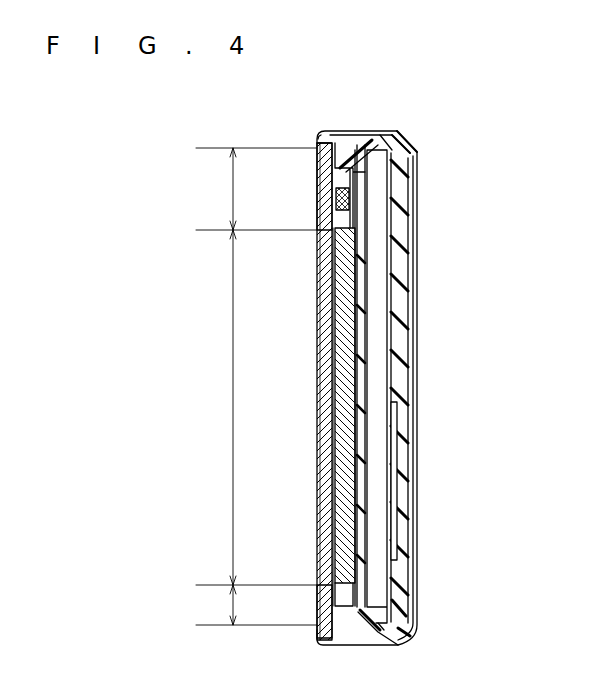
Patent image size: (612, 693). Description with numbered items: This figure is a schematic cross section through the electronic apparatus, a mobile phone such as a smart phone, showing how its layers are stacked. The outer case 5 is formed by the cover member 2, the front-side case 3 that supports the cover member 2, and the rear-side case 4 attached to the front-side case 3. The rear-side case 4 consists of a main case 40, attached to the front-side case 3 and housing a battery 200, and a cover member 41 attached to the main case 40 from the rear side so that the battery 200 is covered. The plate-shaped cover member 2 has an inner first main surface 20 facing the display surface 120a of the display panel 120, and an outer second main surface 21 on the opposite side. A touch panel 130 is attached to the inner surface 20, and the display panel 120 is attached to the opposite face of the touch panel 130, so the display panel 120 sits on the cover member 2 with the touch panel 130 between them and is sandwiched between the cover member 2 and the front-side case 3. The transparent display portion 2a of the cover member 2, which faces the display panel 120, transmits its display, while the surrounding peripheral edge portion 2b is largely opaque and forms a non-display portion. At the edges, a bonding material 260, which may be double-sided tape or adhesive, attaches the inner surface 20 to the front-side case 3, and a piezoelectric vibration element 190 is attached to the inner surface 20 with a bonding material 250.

The outer case 5 is at (408, 129).
The rear-side case 4 is at (481, 520).
The main case 40 is at (415, 567).
The cover member 41 is at (412, 535).
The cover member 2 is at (317, 312).
The second main surface 21 is at (317, 355).
The display portion 2a is at (215, 411).
The peripheral edge portion 2b is at (215, 397).
The bonding material 260 is at (317, 160).
The bonding material 250 is at (333, 208).
The display panel 120 is at (350, 247).
The display surface 120a is at (333, 270).
The piezoelectric vibration element 190 is at (357, 197).
The touch panel 130 is at (358, 293).
The front-side case 3 is at (360, 400).
The first main surface 20 is at (380, 342).
The battery 200 is at (398, 448).